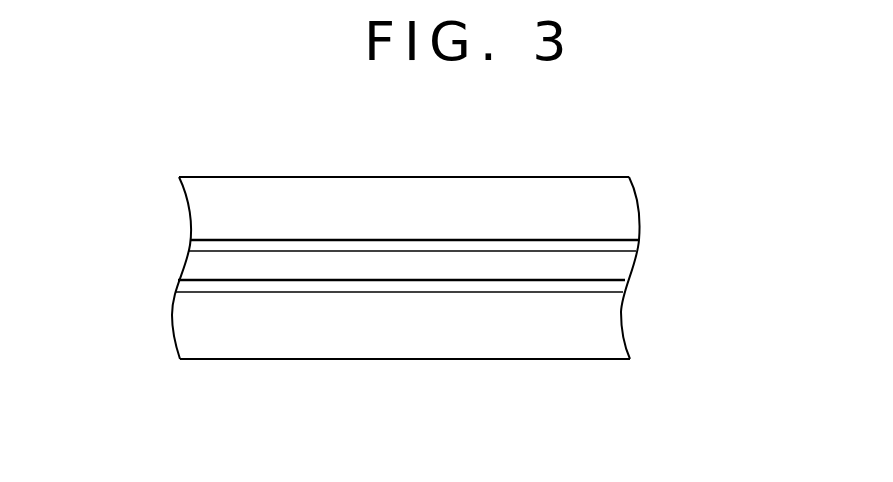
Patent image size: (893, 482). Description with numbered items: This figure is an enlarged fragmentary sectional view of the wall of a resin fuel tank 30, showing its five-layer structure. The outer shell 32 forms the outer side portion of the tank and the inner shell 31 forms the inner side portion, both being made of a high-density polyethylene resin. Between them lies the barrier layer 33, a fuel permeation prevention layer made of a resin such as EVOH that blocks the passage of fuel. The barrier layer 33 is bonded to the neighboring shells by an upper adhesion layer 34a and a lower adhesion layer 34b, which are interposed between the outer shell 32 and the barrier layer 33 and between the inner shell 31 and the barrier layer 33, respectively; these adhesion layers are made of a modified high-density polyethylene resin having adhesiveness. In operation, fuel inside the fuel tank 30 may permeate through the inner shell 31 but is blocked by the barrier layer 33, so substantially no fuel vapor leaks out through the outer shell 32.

The fuel tank 30 is at (532, 177).
The inner shell 31 is at (451, 348).
The outer shell 32 is at (442, 200).
The barrier layer 33 is at (618, 265).
The upper adhesion layer 34a is at (628, 247).
The lower adhesion layer 34b is at (610, 287).